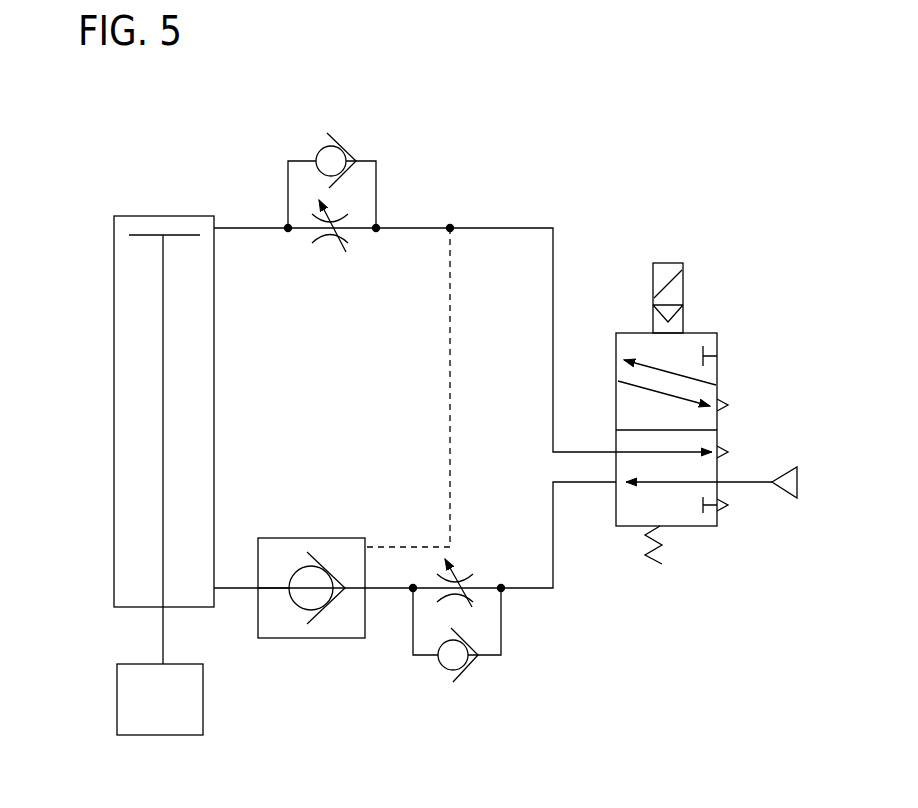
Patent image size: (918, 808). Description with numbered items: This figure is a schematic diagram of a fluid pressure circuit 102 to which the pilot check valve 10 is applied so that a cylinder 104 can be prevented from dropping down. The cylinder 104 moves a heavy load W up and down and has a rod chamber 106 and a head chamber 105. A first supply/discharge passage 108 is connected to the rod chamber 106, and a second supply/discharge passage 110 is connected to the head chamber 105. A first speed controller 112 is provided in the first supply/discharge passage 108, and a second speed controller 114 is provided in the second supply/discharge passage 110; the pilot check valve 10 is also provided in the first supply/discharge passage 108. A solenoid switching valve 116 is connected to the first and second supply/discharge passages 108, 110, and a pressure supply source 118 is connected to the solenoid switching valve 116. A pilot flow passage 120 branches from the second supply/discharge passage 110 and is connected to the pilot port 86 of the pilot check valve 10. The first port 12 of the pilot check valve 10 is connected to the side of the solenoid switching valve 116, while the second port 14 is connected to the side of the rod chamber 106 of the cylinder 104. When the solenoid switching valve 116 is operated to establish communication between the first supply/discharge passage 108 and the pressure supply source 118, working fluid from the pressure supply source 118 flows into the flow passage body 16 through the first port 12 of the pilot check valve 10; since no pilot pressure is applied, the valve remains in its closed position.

The fluid pressure circuit 102 is at (257, 113).
The cylinder 104 is at (108, 322).
The head chamber 105 is at (134, 226).
The rod chamber 106 is at (130, 471).
The heavy load W is at (138, 702).
The first supply/discharge passage 108 is at (520, 590).
The second supply/discharge passage 110 is at (497, 228).
The first speed controller 112 is at (458, 692).
The second speed controller 114 is at (361, 139).
The solenoid switching valve 116 is at (722, 369).
The pressure supply source 118 is at (781, 499).
The pilot flow passage 120 is at (449, 352).
The pilot check valve 10 is at (282, 534).
The first port 12 is at (360, 590).
The second port 14 is at (258, 590).
The flow passage body 16 is at (355, 592).
The pilot port 86 is at (366, 547).